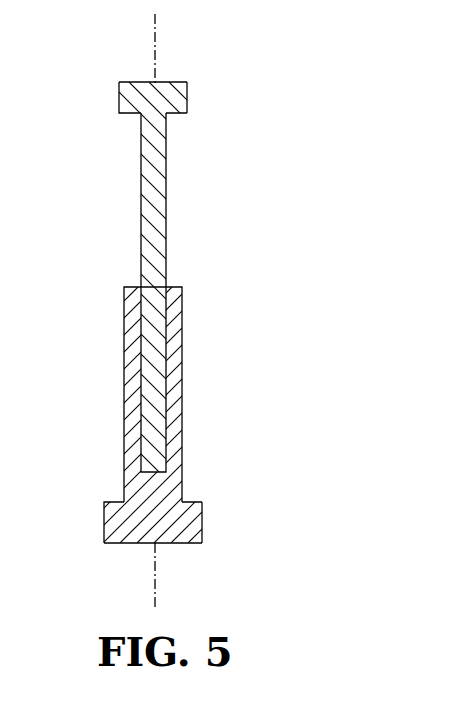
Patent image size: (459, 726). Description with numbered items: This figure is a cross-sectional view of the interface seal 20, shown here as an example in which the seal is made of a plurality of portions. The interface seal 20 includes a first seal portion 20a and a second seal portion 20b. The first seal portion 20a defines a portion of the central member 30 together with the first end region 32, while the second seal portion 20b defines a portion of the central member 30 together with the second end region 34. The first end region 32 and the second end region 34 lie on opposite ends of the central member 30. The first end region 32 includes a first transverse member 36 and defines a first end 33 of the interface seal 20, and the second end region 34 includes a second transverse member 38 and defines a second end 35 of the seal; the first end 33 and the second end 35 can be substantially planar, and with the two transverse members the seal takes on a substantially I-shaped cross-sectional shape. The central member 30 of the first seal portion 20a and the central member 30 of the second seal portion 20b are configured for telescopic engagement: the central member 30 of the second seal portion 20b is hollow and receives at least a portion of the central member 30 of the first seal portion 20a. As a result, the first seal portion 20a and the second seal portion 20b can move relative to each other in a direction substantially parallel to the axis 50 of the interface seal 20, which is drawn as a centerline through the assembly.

The interface seal 20 is at (76, 76).
The first seal portion 20a is at (185, 168).
The second seal portion 20b is at (204, 383).
The central member 30 is at (93, 290).
The first end region 32 is at (98, 125).
The first end 33 is at (168, 82).
The second end region 34 is at (76, 478).
The second end 35 is at (185, 545).
The first transverse member 36 is at (187, 100).
The second transverse member 38 is at (202, 522).
The axis 50 is at (152, 562).